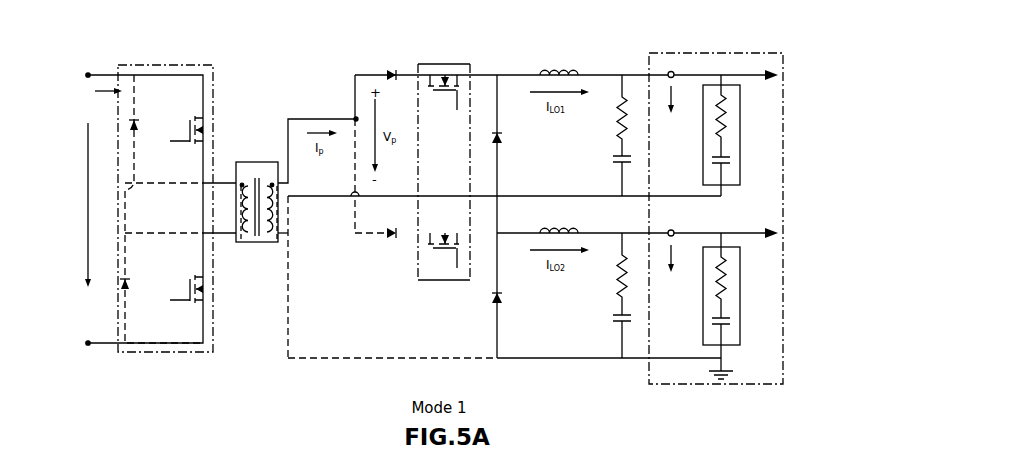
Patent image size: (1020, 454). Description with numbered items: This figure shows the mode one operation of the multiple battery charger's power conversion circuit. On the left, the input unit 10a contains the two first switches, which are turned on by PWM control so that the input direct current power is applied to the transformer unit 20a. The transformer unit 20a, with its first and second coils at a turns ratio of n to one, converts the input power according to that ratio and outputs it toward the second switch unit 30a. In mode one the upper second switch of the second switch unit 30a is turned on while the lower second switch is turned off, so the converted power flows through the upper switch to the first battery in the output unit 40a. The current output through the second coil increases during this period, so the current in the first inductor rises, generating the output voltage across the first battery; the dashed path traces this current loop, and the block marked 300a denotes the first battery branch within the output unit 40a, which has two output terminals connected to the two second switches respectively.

The input unit 10a is at (213, 105).
The transformer unit 20a is at (268, 162).
The second switch unit 30a is at (445, 64).
The output unit 40a is at (783, 117).
The battery 300a is at (703, 158).